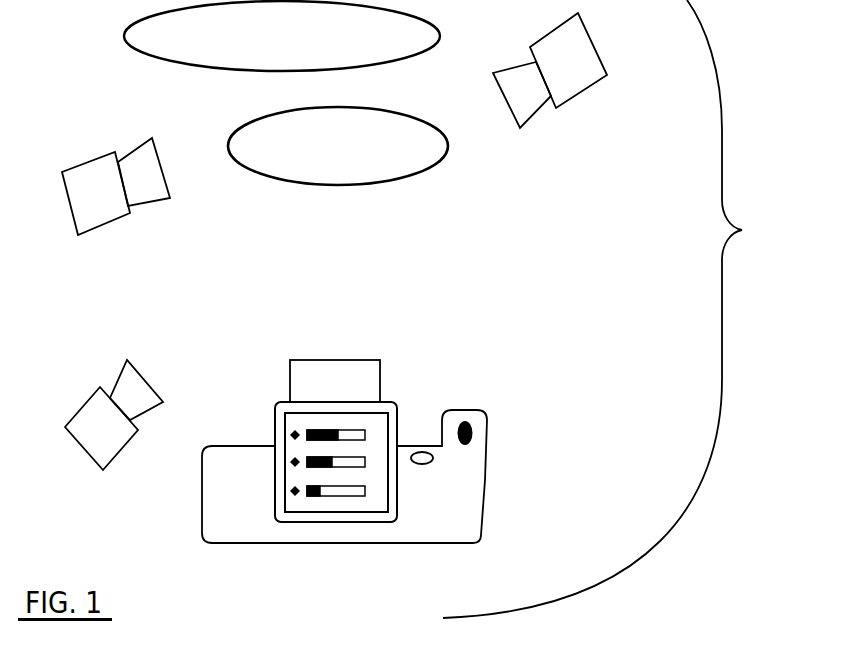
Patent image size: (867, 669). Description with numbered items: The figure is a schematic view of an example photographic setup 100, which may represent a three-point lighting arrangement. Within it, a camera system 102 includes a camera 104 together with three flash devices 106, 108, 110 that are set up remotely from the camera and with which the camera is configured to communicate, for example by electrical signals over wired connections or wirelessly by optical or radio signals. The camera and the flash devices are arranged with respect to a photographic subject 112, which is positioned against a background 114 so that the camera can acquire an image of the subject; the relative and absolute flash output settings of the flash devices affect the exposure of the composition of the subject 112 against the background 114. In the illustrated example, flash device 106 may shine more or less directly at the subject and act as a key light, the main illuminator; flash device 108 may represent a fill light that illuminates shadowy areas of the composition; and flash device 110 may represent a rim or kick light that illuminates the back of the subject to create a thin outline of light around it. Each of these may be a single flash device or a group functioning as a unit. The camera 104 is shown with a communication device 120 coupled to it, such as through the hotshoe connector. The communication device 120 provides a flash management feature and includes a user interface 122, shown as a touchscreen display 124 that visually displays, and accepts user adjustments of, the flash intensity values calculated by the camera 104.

The photographic setup 100 is at (610, 309).
The camera system 102 is at (553, 338).
The camera 104 is at (486, 458).
The flash device 106 is at (80, 445).
The flash device 108 is at (73, 227).
The flash device 110 is at (587, 88).
The photographic subject 112 is at (428, 170).
The background 114 is at (209, 46).
The communication device 120 is at (386, 402).
The user interface 122 is at (372, 513).
The touchscreen display 124 is at (308, 512).